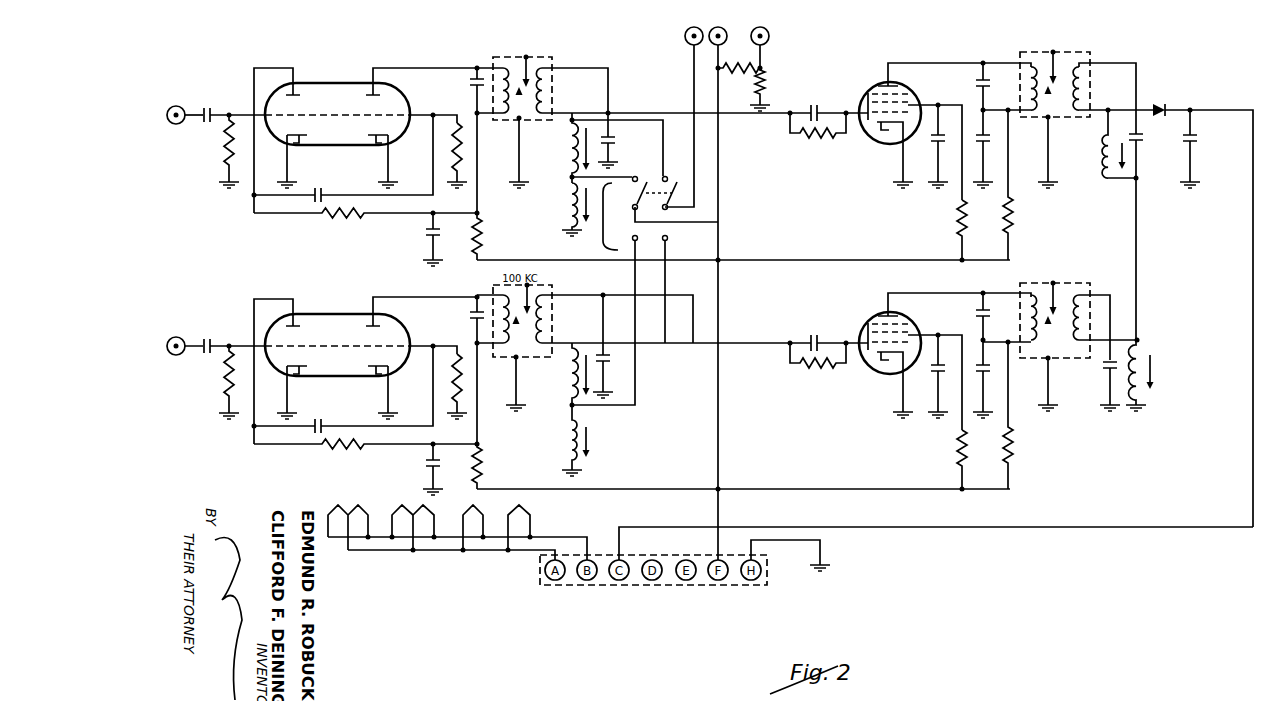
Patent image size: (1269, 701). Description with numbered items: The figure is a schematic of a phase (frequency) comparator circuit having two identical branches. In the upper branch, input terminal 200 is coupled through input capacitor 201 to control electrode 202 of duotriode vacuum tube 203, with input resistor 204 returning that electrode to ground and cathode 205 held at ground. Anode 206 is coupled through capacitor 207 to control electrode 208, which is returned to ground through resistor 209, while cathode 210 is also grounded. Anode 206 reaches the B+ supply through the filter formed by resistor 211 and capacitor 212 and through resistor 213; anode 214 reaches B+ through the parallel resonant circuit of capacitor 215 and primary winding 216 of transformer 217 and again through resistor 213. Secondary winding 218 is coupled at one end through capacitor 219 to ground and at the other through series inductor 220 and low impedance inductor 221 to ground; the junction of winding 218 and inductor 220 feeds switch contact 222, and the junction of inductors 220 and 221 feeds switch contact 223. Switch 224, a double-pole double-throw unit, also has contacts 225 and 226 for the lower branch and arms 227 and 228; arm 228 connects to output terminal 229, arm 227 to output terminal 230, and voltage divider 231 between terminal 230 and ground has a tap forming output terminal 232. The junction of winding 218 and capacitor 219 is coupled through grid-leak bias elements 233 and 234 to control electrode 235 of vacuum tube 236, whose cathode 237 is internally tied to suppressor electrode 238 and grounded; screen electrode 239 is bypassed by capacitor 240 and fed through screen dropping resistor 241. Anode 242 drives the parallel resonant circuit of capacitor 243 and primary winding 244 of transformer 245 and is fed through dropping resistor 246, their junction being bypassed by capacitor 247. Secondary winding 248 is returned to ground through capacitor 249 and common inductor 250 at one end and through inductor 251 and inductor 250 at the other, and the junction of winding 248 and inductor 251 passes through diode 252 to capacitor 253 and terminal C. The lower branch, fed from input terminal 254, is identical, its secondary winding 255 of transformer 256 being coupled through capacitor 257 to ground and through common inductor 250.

The input terminal 200 is at (173, 125).
The input capacitor 201 is at (207, 106).
The control electrode 202 is at (308, 112).
The duotriode vacuum tube 203 is at (305, 82).
The input resistor 204 is at (226, 150).
The cathode 205 is at (297, 146).
The anode 206 is at (290, 82).
The capacitor 207 is at (321, 192).
The control electrode 208 is at (385, 112).
The resistor 209 is at (455, 148).
The cathode 210 is at (378, 144).
The resistor 211 is at (342, 216).
The capacitor 212 is at (424, 232).
The resistor 213 is at (479, 236).
The anode 214 is at (369, 82).
The capacitor 215 is at (472, 78).
The primary winding 216 is at (493, 109).
The transformer 217 is at (542, 107).
The secondary winding 218 is at (546, 75).
The capacitor 219 is at (614, 138).
The inductor 220 is at (571, 140).
The low impedance inductor 221 is at (571, 200).
The switch contact 222 is at (667, 176).
The switch contact 223 is at (637, 176).
The switch 224 is at (563, 261).
The switch contact 225 is at (632, 240).
The switch contact 226 is at (668, 240).
The arm 227 is at (643, 193).
The arm 228 is at (670, 192).
The output terminal 229 is at (686, 31).
The output terminal 230 is at (717, 29).
The voltage divider 231 is at (732, 63).
The output terminal 232 is at (767, 31).
The grid-leak bias element 233 is at (820, 138).
The grid-leak bias element 234 is at (818, 104).
The control electrode 235 is at (908, 111).
The vacuum tube 236 is at (929, 122).
The cathode 237 is at (888, 140).
The suppressor electrode 238 is at (867, 92).
The screen electrode 239 is at (906, 100).
The bypass capacitor 240 is at (930, 137).
The screen dropping resistor 241 is at (960, 214).
The anode 242 is at (885, 84).
The capacitor 243 is at (986, 78).
The primary winding 244 is at (1036, 114).
The transformer 245 is at (1083, 107).
The dropping resistor 246 is at (1014, 227).
The bypass capacitor 247 is at (988, 132).
The secondary winding 248 is at (1077, 99).
The capacitor 249 is at (1142, 134).
The common inductor 250 is at (1144, 345).
The inductor 251 is at (1105, 145).
The diode 252 is at (1167, 108).
The capacitor 253 is at (1197, 135).
The input terminal 254 is at (170, 371).
The secondary winding 255 is at (1076, 298).
The transformer 256 is at (1079, 333).
The capacitor 257 is at (1104, 361).